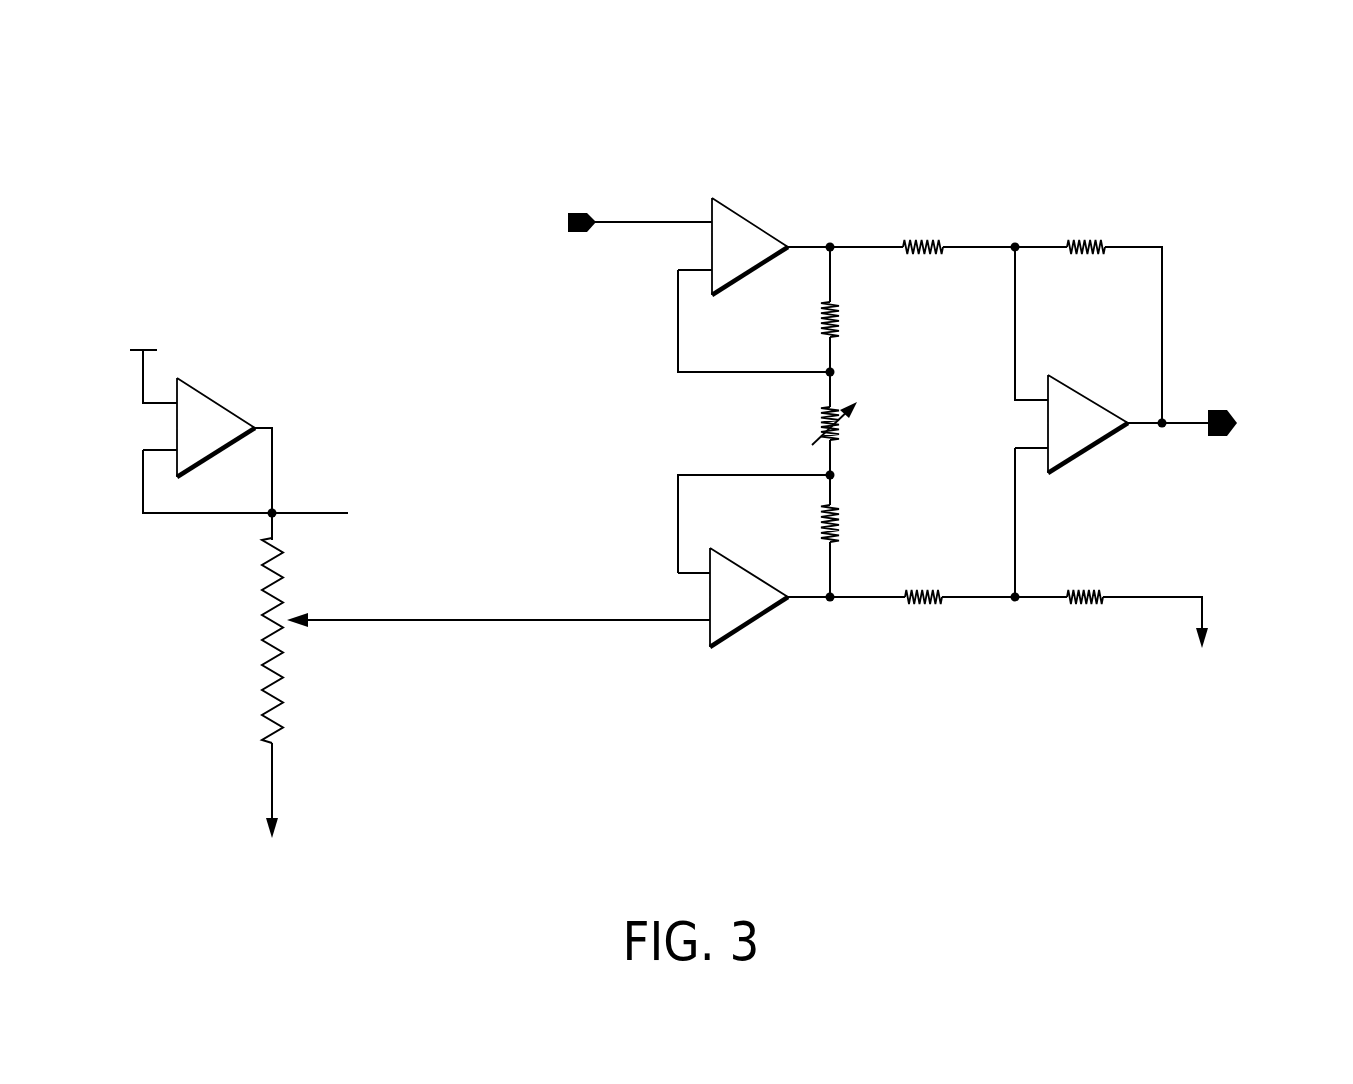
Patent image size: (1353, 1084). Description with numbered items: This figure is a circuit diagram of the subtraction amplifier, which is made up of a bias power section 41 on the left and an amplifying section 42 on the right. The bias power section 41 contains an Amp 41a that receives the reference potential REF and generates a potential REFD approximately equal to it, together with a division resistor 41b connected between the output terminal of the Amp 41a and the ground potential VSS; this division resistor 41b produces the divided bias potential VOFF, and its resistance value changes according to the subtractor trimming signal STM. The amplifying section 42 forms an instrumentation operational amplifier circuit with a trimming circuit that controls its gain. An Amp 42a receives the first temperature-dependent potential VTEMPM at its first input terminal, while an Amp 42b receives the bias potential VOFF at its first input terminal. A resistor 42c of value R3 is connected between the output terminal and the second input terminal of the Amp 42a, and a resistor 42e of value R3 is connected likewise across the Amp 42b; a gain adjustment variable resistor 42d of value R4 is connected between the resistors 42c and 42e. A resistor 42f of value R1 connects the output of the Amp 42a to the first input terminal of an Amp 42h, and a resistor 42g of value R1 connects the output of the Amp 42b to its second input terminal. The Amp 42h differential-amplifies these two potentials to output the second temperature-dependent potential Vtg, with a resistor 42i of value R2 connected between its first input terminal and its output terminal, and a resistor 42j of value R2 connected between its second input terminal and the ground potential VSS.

The bias power section 41 is at (120, 145).
The Amp 41a is at (215, 400).
The division resistor 41b is at (283, 678).
The amplifying section 42 is at (1280, 147).
The Amp 42a is at (740, 212).
The Amp 42b is at (757, 623).
The resistor 42c is at (841, 332).
The gain adjustment variable resistor 42d is at (841, 438).
The resistor 42e is at (841, 538).
The resistor 42f is at (903, 237).
The resistor 42g is at (905, 607).
The Amp 42h is at (1085, 403).
The resistor 42i is at (1067, 237).
The resistor 42j is at (1067, 607).